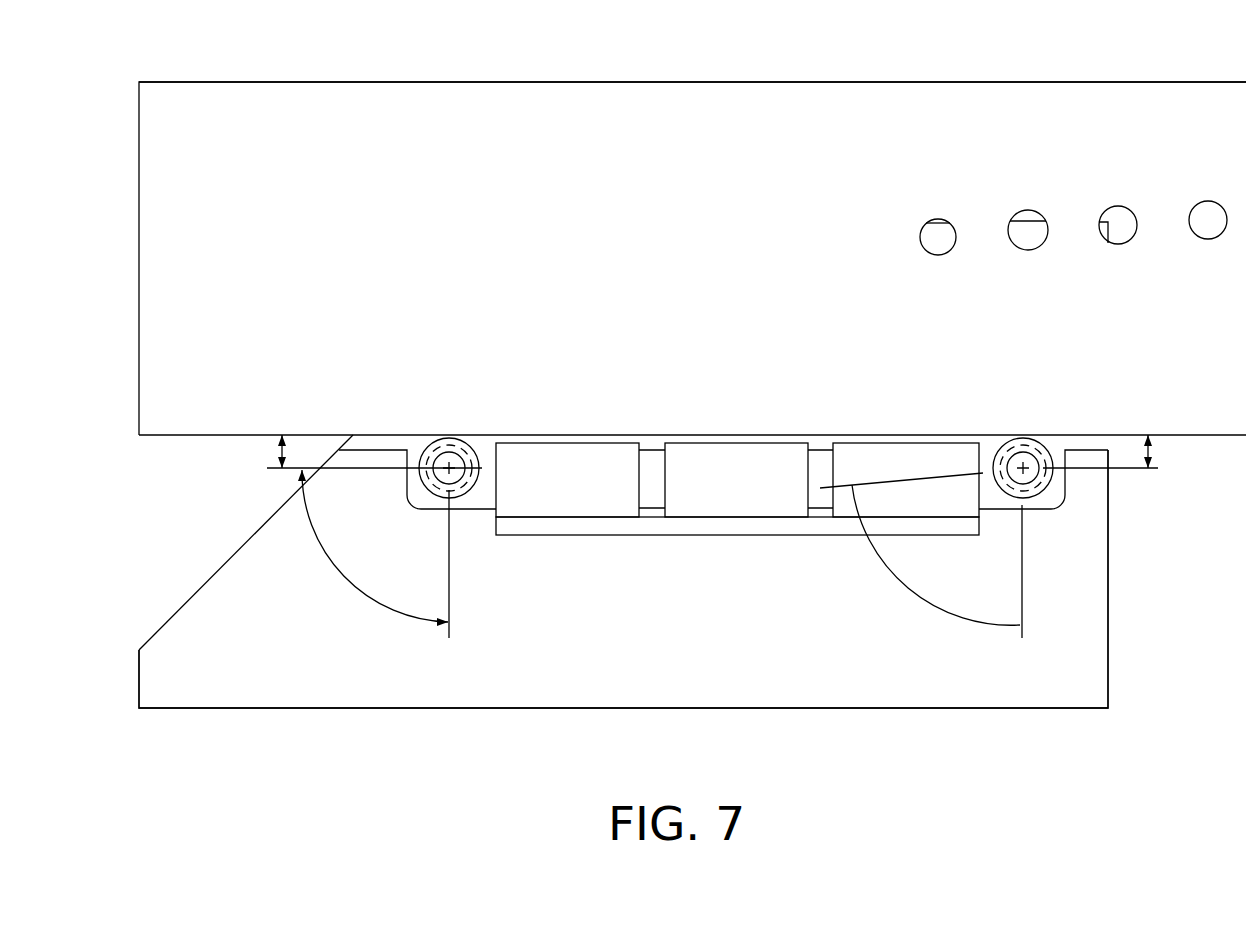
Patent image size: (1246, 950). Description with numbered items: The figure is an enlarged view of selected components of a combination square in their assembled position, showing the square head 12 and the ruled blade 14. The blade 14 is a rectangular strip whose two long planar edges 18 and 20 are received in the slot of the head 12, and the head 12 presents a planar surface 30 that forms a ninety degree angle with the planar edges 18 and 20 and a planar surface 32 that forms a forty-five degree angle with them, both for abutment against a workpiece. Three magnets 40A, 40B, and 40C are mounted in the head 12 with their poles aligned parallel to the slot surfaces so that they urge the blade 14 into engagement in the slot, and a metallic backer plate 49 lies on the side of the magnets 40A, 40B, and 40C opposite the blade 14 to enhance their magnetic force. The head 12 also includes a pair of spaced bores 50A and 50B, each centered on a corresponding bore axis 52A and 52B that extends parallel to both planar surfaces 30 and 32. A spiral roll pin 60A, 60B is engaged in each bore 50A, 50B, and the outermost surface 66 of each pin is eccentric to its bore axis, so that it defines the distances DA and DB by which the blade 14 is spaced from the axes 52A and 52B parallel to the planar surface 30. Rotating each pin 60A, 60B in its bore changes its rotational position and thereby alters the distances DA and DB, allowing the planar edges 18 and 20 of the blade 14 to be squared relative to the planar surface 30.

The square head 12 is at (483, 708).
The ruled blade 14 is at (871, 80).
The planar edge 18 is at (338, 82).
The planar edge 20 is at (160, 437).
The planar surface 30 is at (1108, 686).
The planar surface 32 is at (197, 593).
The magnet 40A is at (600, 508).
The magnet 40B is at (690, 507).
The magnet 40C is at (924, 507).
The metallic backer plate 49 is at (721, 524).
The bore 50A is at (480, 470).
The bore 50B is at (1033, 482).
The bore axis 52A is at (450, 468).
The bore axis 52B is at (1023, 468).
The spiral roll pin 60A is at (469, 456).
The spiral roll pin 60B is at (1042, 482).
The outermost surface 66 is at (423, 490).
The distance DA is at (280, 452).
The distance DB is at (1150, 450).